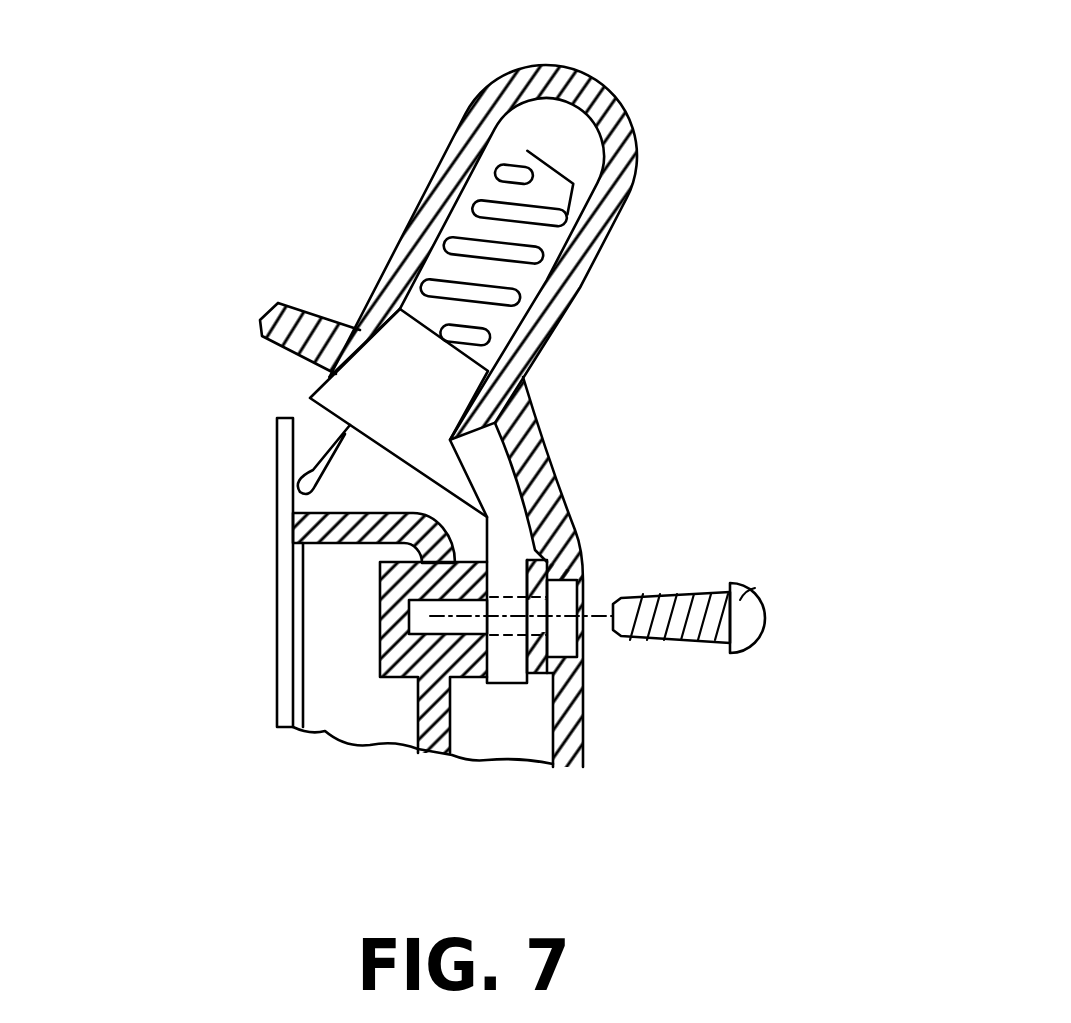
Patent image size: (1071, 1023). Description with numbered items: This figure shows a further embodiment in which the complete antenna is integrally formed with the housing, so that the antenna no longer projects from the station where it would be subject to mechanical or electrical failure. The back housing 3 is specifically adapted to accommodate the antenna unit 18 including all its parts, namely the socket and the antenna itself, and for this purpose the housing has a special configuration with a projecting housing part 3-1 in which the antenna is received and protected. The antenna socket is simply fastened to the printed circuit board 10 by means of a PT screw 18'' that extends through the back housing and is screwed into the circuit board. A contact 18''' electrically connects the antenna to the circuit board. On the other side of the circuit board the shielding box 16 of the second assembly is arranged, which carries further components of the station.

The projecting housing part 3-1 is at (605, 100).
The antenna unit 18 is at (568, 251).
The back housing 3 is at (530, 368).
The contact 18''' is at (323, 493).
The printed circuit board 10 is at (277, 496).
The shielding box 16 is at (443, 747).
The PT screw 18'' is at (623, 562).